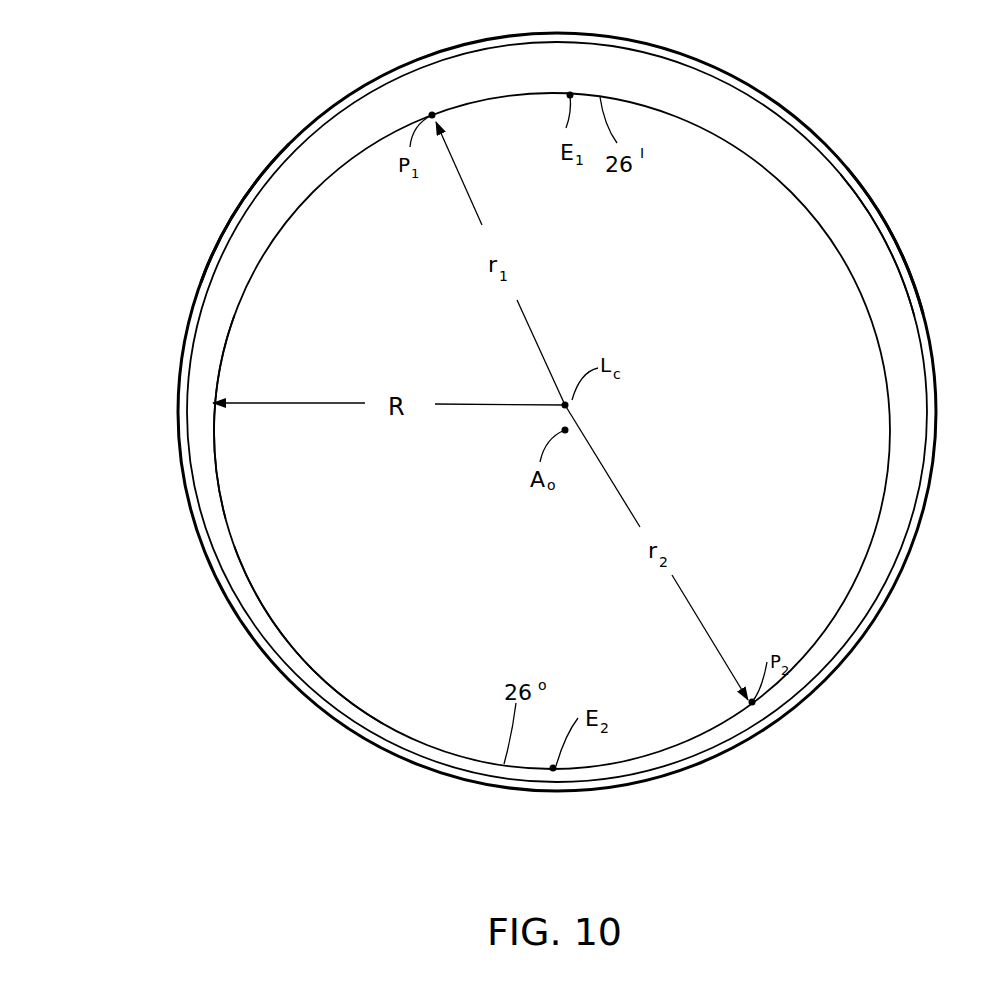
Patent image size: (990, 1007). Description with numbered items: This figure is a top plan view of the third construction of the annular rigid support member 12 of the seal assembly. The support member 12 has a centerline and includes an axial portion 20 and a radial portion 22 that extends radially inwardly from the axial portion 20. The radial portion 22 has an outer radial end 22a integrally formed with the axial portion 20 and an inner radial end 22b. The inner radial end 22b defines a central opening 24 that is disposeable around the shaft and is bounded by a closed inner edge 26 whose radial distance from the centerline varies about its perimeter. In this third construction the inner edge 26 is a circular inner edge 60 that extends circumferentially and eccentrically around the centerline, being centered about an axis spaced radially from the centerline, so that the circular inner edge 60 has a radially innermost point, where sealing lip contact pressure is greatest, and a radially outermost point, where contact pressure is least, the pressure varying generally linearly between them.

The annular rigid support member 12 is at (178, 172).
The axial portion 20 is at (797, 108).
The radial portion 22 is at (812, 156).
The outer radial end 22a is at (850, 195).
The inner radial end 22b is at (843, 245).
The central opening 24 is at (287, 296).
The inner edge 26 is at (272, 617).
The circular inner edge 60 is at (215, 483).